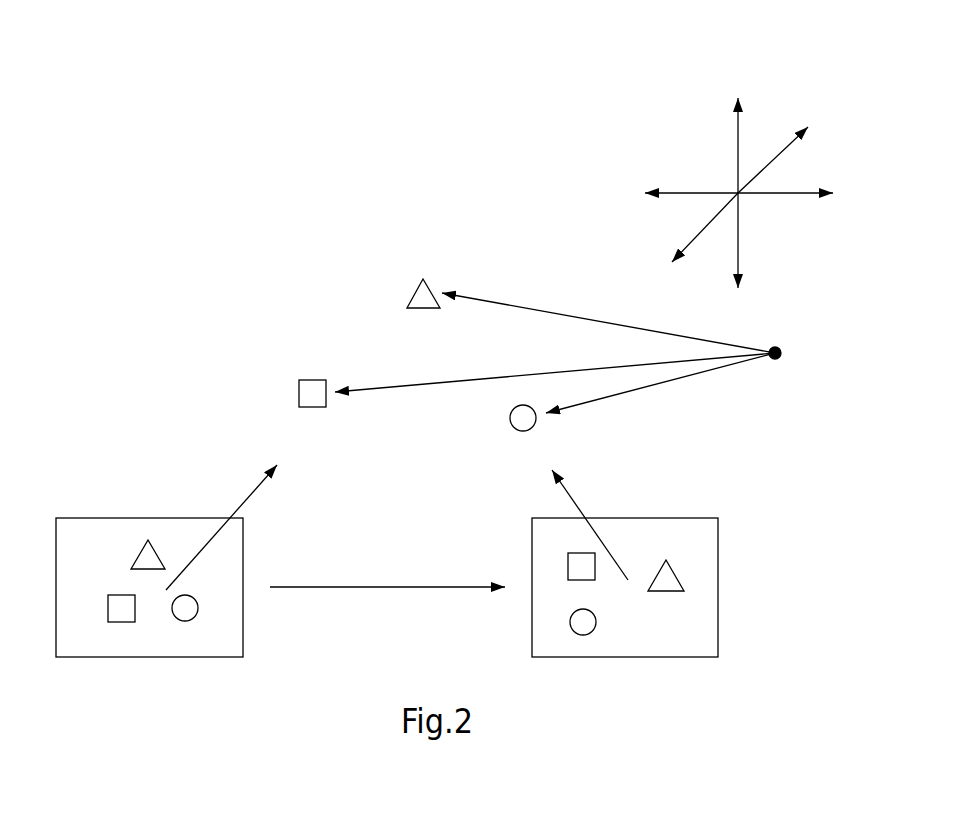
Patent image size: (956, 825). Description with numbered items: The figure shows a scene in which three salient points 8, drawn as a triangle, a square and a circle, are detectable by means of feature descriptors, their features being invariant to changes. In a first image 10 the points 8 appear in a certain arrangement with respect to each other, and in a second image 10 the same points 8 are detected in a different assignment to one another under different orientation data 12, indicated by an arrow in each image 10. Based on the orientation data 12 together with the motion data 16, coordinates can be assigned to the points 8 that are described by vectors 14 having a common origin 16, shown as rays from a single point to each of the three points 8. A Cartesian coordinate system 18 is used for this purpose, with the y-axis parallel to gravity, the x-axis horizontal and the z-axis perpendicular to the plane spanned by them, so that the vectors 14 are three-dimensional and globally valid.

The salient points 8 is at (405, 290).
The image 10 is at (94, 516).
The orientation data 12 is at (238, 500).
The vectors 14 is at (516, 302).
The common origin 16 is at (781, 362).
The Cartesian coordinate system 18 is at (680, 127).